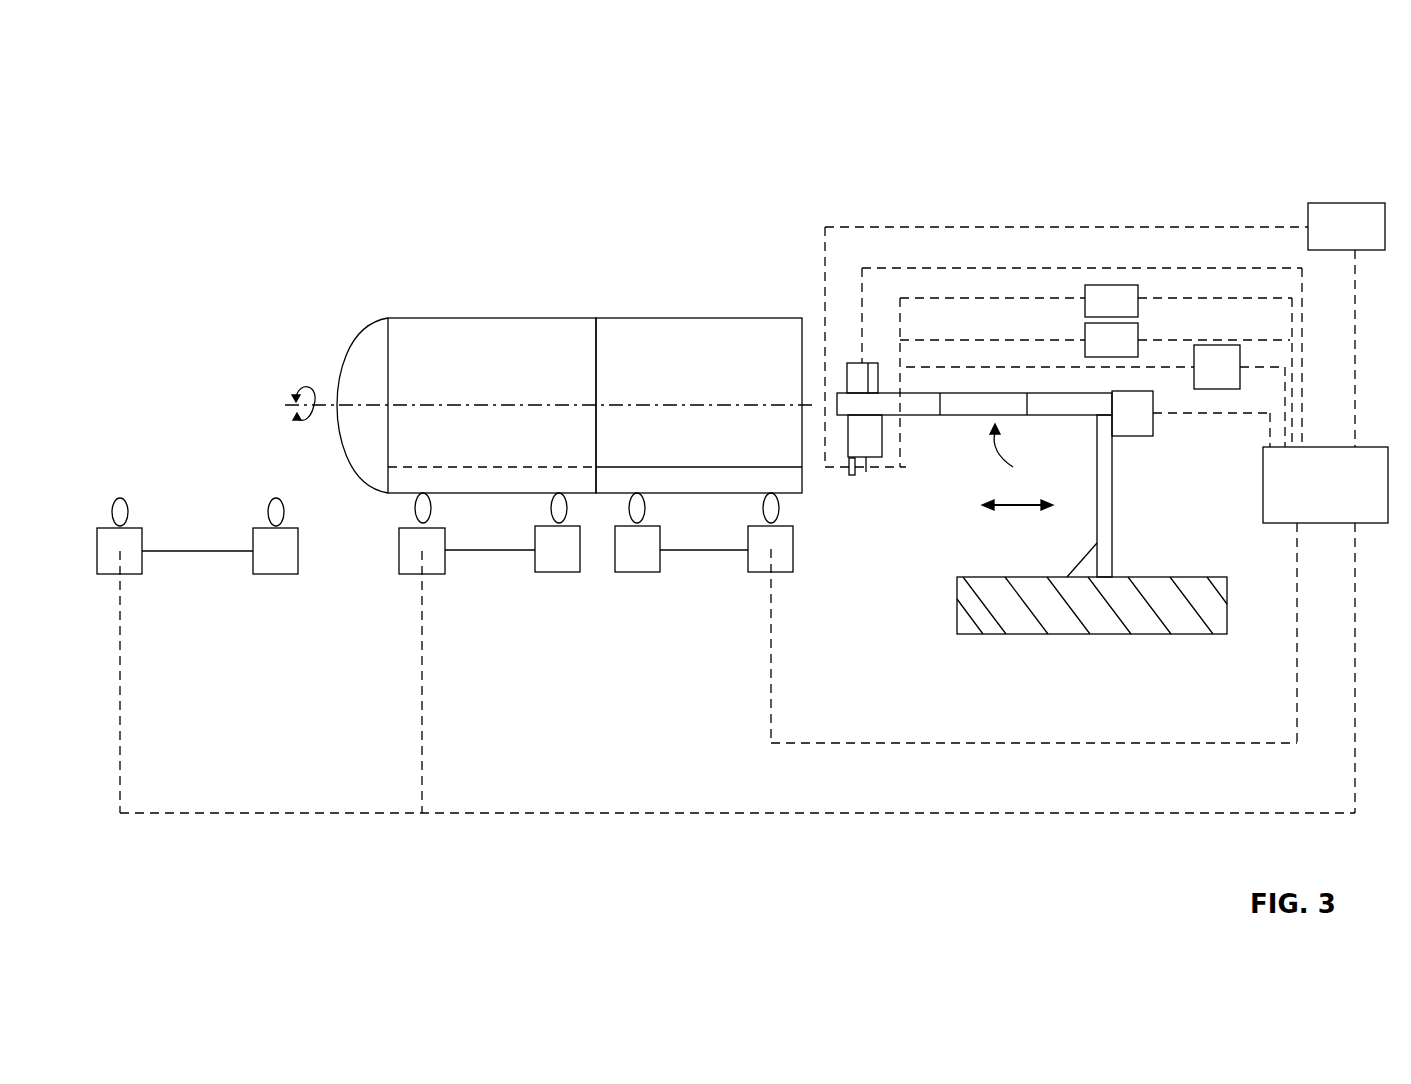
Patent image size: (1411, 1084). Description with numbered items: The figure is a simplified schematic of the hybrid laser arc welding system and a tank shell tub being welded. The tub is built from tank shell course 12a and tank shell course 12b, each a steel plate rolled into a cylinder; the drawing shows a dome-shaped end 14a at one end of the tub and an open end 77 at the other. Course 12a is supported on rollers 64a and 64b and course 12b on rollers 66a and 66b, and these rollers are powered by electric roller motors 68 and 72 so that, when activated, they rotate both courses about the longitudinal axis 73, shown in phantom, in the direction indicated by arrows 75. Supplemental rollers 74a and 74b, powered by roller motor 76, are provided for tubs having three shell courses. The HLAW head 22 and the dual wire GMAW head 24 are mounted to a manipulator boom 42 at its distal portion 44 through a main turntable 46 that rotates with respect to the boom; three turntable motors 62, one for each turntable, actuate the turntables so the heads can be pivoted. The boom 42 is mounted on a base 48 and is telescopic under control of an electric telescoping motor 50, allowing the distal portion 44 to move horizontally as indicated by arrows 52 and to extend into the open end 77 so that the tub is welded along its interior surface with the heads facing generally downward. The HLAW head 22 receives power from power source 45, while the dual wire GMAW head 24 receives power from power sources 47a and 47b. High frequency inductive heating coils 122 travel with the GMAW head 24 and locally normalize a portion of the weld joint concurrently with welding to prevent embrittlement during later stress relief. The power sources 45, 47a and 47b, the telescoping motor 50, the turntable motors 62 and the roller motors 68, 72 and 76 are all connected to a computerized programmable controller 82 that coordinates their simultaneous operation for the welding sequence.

The tank shell course 12a is at (512, 386).
The tank shell course 12b is at (719, 386).
The domed end 14a is at (366, 347).
The longitudinal axis 73 is at (540, 405).
The arrows 75 is at (312, 425).
The open end 77 is at (802, 332).
The turntable motors 62 is at (857, 365).
The distal portion 44 is at (870, 403).
The power source 47a is at (1112, 292).
The power source 47b is at (1089, 354).
The power source 45 is at (1331, 242).
The programmable controller 82 is at (1388, 462).
The supplemental roller 74a is at (113, 508).
The supplemental roller 74b is at (267, 508).
The roller motor 76 is at (133, 575).
The roller 64a is at (413, 510).
The roller 64b is at (551, 510).
The roller motor 68 is at (445, 578).
The roller 66a is at (630, 507).
The roller 66b is at (783, 508).
The roller motor 72 is at (748, 572).
The main turntable 46 is at (848, 433).
The inductive heating coils 122 is at (877, 460).
The dual wire GMAW head 24 is at (867, 460).
The HLAW head 22 is at (853, 472).
The manipulator boom 42 is at (1020, 456).
The arrows 52 is at (1015, 508).
The base 48 is at (1127, 577).
The electric telescoping motor 50 is at (1132, 437).